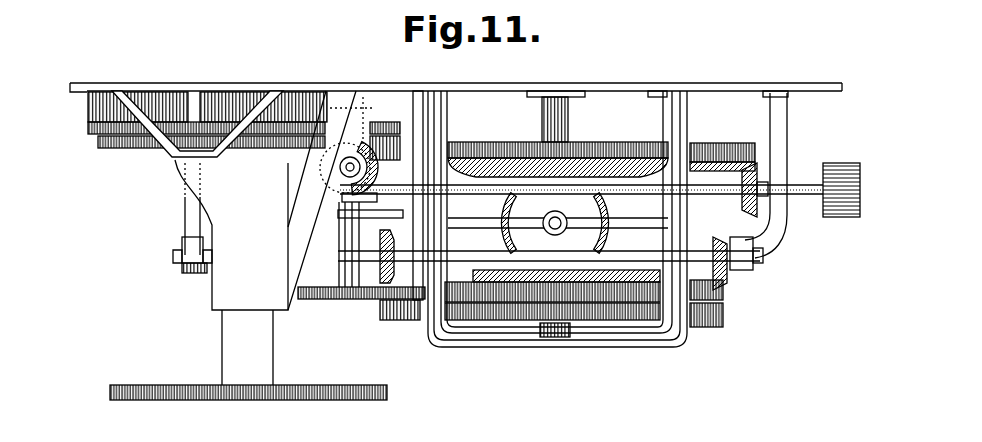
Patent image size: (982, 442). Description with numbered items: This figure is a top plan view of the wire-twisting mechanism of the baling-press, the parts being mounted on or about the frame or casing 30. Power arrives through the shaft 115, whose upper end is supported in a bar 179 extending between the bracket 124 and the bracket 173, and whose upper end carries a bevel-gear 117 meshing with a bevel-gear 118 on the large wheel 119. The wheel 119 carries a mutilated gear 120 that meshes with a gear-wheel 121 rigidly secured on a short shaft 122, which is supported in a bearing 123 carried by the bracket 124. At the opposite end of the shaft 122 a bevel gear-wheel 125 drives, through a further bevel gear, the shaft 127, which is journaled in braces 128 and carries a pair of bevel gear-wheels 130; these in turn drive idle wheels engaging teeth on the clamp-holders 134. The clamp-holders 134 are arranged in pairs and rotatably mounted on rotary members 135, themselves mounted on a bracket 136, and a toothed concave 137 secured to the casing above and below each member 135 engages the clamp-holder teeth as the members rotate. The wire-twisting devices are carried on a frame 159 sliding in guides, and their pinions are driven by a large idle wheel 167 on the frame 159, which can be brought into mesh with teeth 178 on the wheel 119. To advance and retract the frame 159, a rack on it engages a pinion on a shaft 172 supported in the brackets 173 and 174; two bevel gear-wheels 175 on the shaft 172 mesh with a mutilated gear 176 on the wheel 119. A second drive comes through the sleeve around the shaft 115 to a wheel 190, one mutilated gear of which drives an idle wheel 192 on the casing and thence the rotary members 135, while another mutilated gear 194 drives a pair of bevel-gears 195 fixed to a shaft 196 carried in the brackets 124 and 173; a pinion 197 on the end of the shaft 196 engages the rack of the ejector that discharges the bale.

The frame or casing 30 is at (600, 88).
The shaft 115 is at (553, 223).
The bevel-gear 117 is at (538, 202).
The bevel-gear 118 is at (493, 282).
The large wheel 119 is at (532, 305).
The mutilated gear 120 is at (418, 296).
The gear-wheel 121 is at (357, 298).
The short shaft 122 is at (347, 273).
The bearing 123 is at (350, 253).
The bracket 124 is at (415, 300).
The bevel gear-wheel 125 is at (337, 190).
The shaft 127 is at (347, 163).
The braces 128 is at (377, 90).
The bevel gear-wheels 130 is at (382, 128).
The clamp-holders 134 is at (110, 122).
The rotary member 135 is at (120, 140).
The bracket 136 is at (182, 155).
The toothed concave 137 is at (267, 12).
The frame 159 is at (247, 347).
The large idle wheel 167 is at (170, 400).
The shaft 172 is at (713, 302).
The bracket 173 is at (780, 132).
The bracket 174 is at (193, 223).
The bevel gear-wheels 175 is at (382, 246).
The mutilated gear 176 is at (613, 320).
The teeth 178 is at (698, 330).
The bar 179 is at (763, 243).
The wheel 190 is at (630, 142).
The idle wheel 192 is at (330, 148).
The mutilated gear 194 is at (698, 143).
The bevel-gears 195 is at (712, 152).
The shaft 196 is at (473, 180).
The pinion 197 is at (840, 177).